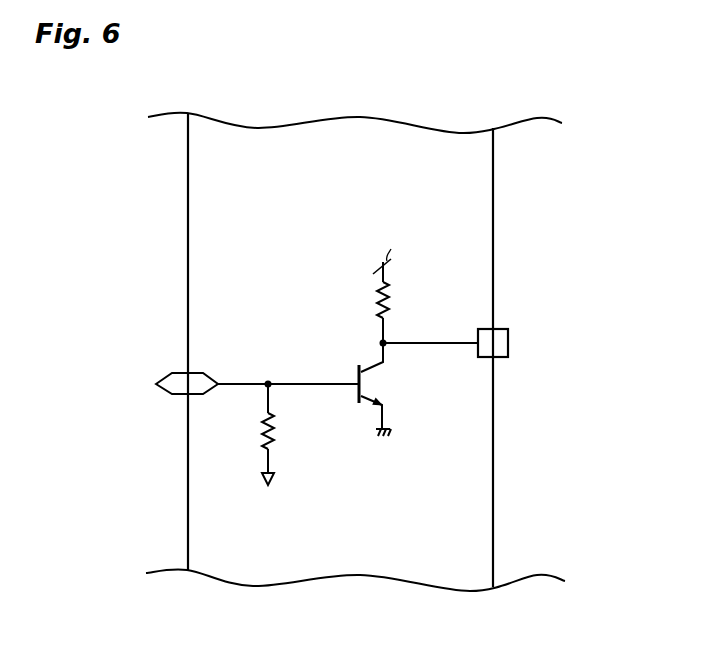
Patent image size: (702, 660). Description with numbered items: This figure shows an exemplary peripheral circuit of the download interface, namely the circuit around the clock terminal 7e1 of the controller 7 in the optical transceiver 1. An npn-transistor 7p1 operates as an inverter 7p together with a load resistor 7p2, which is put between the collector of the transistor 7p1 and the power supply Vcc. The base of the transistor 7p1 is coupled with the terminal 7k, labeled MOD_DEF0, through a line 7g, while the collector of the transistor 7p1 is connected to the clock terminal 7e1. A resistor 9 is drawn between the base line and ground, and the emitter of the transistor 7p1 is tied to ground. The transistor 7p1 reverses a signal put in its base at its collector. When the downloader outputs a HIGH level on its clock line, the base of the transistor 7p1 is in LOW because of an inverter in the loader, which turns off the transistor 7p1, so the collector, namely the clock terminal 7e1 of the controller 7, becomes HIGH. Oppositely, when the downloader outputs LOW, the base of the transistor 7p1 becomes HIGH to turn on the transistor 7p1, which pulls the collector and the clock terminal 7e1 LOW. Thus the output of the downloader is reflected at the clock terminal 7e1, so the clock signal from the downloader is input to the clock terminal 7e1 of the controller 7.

The optical transceiver 1 is at (188, 175).
The controller 7 is at (492, 147).
The terminal 7k is at (182, 372).
The signal line 7g is at (295, 383).
The resistor 9 is at (263, 438).
The inverter 7p is at (367, 330).
The npn-transistor 7p1 is at (375, 388).
The load resistor 7p2 is at (393, 300).
The clock terminal 7e1 is at (508, 343).